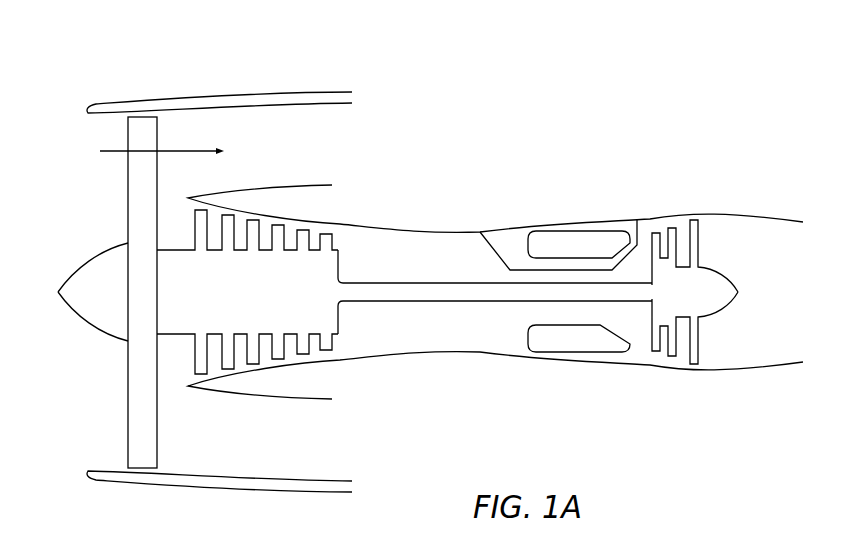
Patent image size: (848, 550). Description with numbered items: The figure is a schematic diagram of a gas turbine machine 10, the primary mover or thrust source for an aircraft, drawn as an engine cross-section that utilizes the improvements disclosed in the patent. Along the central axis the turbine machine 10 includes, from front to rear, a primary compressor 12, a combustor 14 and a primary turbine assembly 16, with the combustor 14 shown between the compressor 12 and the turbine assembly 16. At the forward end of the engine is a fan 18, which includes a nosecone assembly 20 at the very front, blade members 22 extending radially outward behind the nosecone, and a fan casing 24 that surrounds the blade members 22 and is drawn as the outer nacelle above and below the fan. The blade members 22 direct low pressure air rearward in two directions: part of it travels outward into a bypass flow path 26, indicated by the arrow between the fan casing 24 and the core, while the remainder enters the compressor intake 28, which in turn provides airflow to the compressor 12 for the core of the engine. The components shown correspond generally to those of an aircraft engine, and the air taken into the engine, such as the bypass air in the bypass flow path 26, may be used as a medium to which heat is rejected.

The gas turbine machine 10 is at (575, 122).
The primary compressor 12 is at (280, 282).
The combustor 14 is at (567, 245).
The primary turbine assembly 16 is at (688, 292).
The fan 18 is at (72, 179).
The nosecone assembly 20 is at (93, 308).
The blade members 22 is at (143, 452).
The fan casing 24 is at (223, 98).
The bypass flow path 26 is at (188, 152).
The compressor intake 28 is at (187, 232).